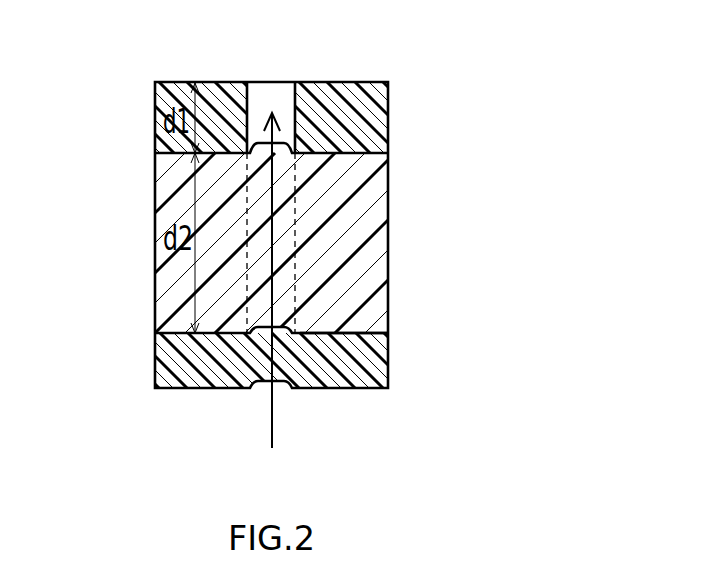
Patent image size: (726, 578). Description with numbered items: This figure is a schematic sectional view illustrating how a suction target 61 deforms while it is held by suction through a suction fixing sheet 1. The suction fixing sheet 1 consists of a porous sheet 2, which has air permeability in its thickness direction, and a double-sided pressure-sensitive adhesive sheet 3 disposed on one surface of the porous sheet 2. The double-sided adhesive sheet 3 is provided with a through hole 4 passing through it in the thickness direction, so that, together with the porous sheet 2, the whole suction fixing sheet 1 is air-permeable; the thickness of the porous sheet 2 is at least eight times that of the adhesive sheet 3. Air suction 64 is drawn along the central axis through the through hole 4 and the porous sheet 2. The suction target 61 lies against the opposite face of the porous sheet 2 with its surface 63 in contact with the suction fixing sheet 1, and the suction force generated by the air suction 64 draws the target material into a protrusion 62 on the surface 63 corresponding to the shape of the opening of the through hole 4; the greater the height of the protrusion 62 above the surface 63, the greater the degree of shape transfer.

The suction fixing sheet 1 is at (287, 207).
The porous sheet 2 is at (287, 243).
The double-sided pressure-sensitive adhesive sheet 3 is at (368, 125).
The through hole 4 is at (273, 103).
The suction target 61 is at (287, 367).
The protrusion 62 is at (283, 335).
The surface 63 is at (357, 332).
The air suction 64 is at (271, 422).